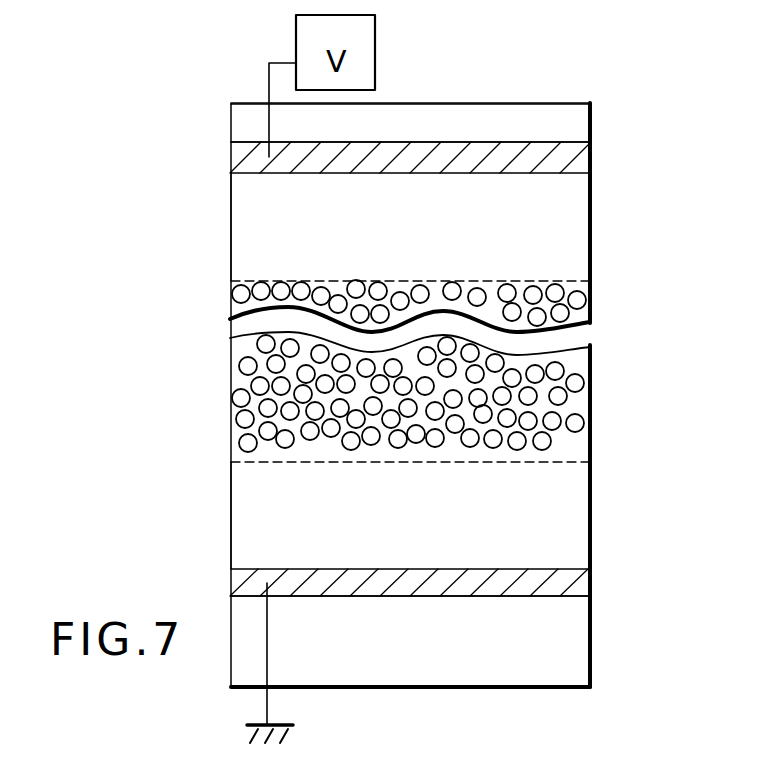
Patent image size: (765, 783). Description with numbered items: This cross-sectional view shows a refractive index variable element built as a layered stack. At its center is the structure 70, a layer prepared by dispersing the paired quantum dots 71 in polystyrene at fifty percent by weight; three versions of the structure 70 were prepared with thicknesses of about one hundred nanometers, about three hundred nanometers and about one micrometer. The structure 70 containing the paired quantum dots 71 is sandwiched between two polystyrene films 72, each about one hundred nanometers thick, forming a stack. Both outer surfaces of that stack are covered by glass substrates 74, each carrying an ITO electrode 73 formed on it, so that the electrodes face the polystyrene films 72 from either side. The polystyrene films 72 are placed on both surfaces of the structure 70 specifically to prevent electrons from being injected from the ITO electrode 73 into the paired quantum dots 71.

The structure 70 is at (592, 404).
The paired quantum dots 71 is at (240, 399).
The polystyrene film 72 is at (578, 230).
The ITO electrode 73 is at (578, 168).
The glass substrate 74 is at (578, 128).